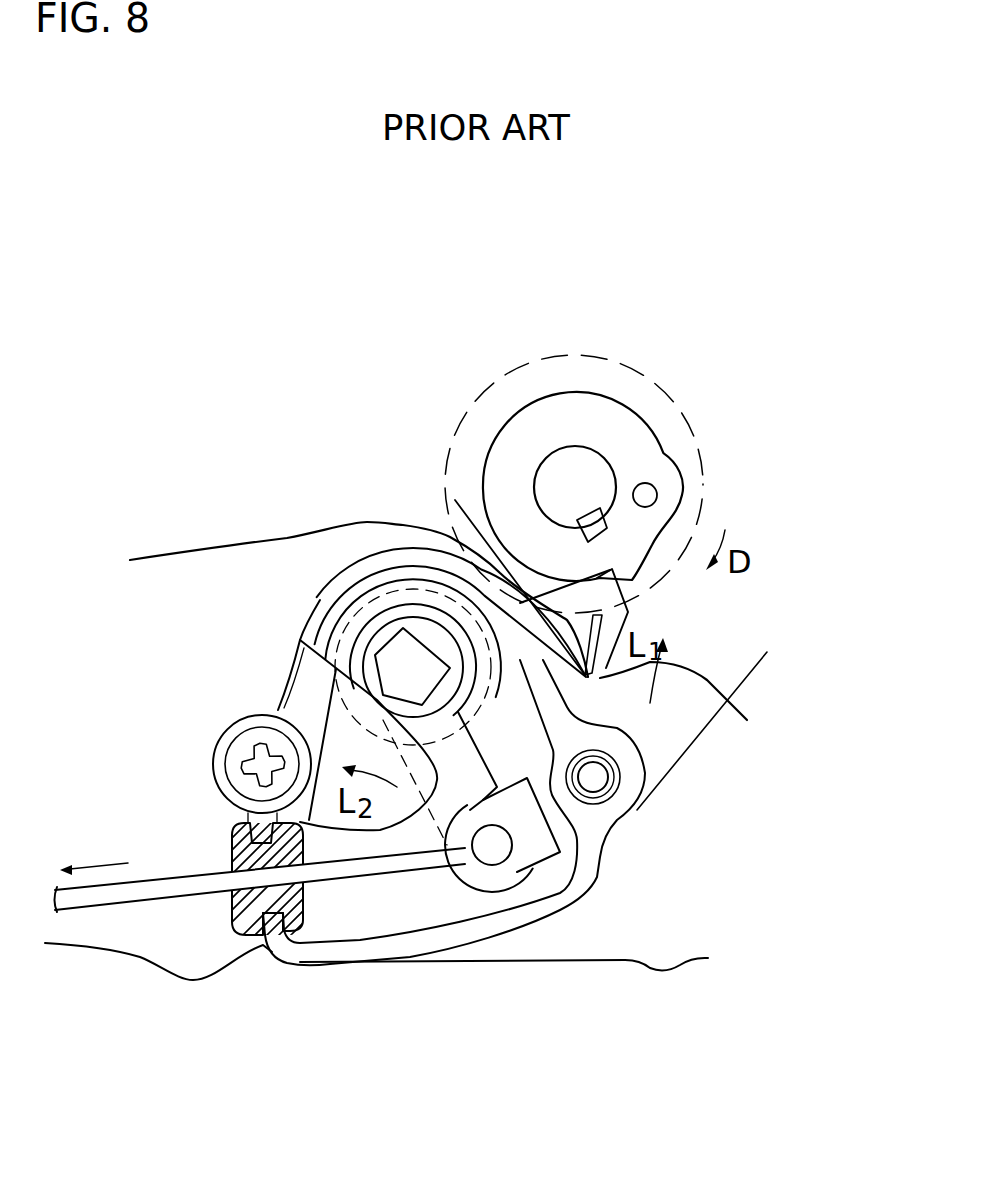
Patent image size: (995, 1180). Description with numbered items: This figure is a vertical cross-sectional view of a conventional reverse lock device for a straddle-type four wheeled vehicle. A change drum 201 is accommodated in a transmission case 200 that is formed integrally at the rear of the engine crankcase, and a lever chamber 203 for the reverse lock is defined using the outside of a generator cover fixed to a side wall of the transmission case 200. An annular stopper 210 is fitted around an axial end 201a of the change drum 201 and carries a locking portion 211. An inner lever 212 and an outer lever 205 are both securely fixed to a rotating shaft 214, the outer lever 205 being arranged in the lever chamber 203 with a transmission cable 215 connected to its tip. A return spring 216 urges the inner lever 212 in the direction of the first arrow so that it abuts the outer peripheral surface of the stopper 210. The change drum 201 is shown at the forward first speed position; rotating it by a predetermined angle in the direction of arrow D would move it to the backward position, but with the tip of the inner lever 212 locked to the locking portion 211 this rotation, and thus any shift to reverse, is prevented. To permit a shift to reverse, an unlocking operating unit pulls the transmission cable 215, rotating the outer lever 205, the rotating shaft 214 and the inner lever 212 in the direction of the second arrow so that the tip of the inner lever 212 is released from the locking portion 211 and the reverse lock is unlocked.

The transmission case 200 is at (767, 652).
The change drum 201 is at (467, 423).
The axial end 201a is at (558, 478).
The lever chamber 203 is at (530, 738).
The outer lever 205 is at (542, 840).
The annular stopper 210 is at (613, 423).
The locking portion 211 is at (633, 580).
The inner lever 212 is at (553, 577).
The rotating shaft 214 is at (387, 640).
The transmission cable 215 is at (156, 891).
The return spring 216 is at (623, 623).